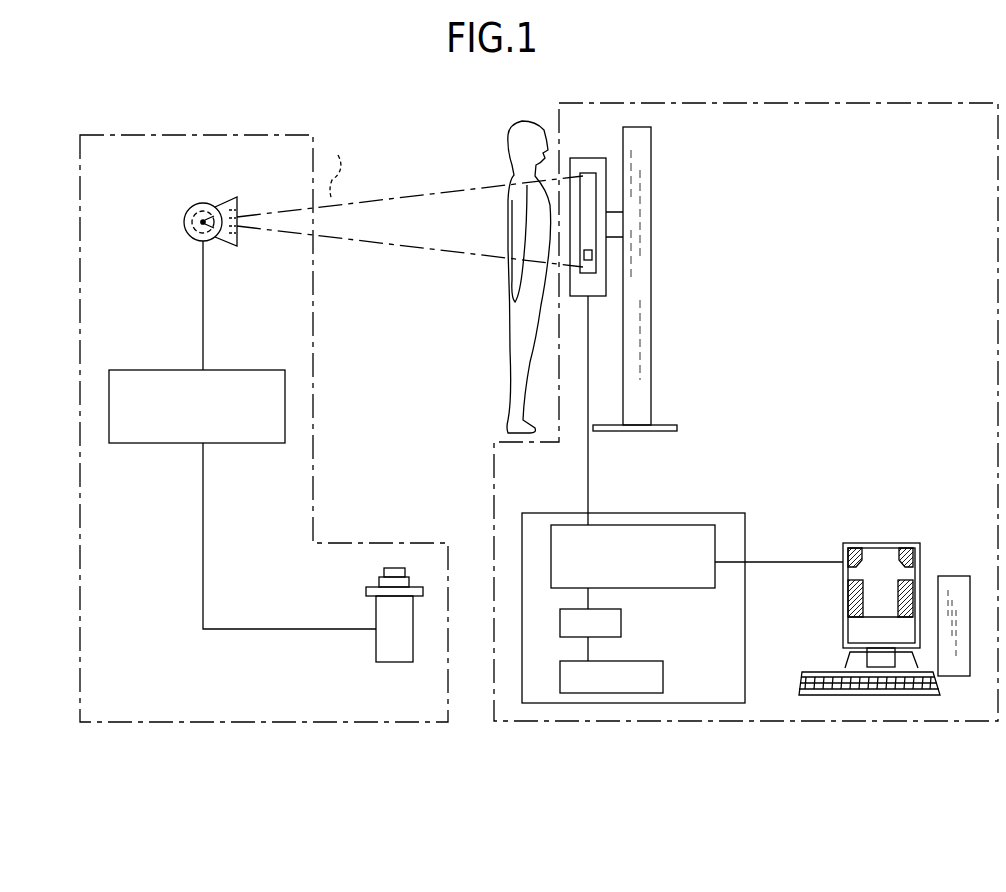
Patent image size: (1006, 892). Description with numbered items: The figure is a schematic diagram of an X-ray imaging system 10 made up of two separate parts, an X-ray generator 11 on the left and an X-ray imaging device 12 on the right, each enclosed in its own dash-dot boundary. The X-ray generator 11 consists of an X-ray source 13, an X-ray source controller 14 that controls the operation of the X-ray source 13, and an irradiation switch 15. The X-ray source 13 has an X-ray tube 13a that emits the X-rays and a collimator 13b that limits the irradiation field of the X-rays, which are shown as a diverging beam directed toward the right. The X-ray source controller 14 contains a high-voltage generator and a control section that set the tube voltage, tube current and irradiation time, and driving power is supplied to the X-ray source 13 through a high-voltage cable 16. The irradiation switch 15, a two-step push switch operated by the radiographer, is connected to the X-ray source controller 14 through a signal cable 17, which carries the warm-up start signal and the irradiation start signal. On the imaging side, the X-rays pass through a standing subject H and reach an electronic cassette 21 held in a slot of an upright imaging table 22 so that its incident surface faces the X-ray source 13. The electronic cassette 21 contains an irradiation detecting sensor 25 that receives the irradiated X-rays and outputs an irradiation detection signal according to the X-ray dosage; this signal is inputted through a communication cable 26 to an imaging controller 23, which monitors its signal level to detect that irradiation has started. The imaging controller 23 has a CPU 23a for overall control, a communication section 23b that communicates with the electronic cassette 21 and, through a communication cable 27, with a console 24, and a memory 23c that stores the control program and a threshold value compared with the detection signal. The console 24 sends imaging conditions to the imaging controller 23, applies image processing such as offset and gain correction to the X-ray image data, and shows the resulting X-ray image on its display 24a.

The X-ray imaging system 10 is at (409, 92).
The X-ray generator 11 is at (172, 134).
The X-ray imaging device 12 is at (681, 103).
The X-ray source 13 is at (196, 198).
The X-ray tube 13a is at (183, 222).
The collimator 13b is at (237, 203).
The X-ray source controller 14 is at (178, 370).
The irradiation switch 15 is at (376, 648).
The high-voltage cable 16 is at (203, 300).
The signal cable 17 is at (203, 502).
The electronic cassette 21 is at (588, 172).
The imaging table 22 is at (651, 186).
The imaging controller 23 is at (659, 503).
The CPU 23a is at (622, 623).
The communication section 23b is at (563, 525).
The memory 23c is at (663, 679).
The console 24 is at (801, 689).
The display 24a is at (873, 565).
The irradiation detecting sensor 25 is at (594, 260).
The communication cable 26 is at (587, 462).
The communication cable 27 is at (799, 563).
The subject H is at (513, 337).